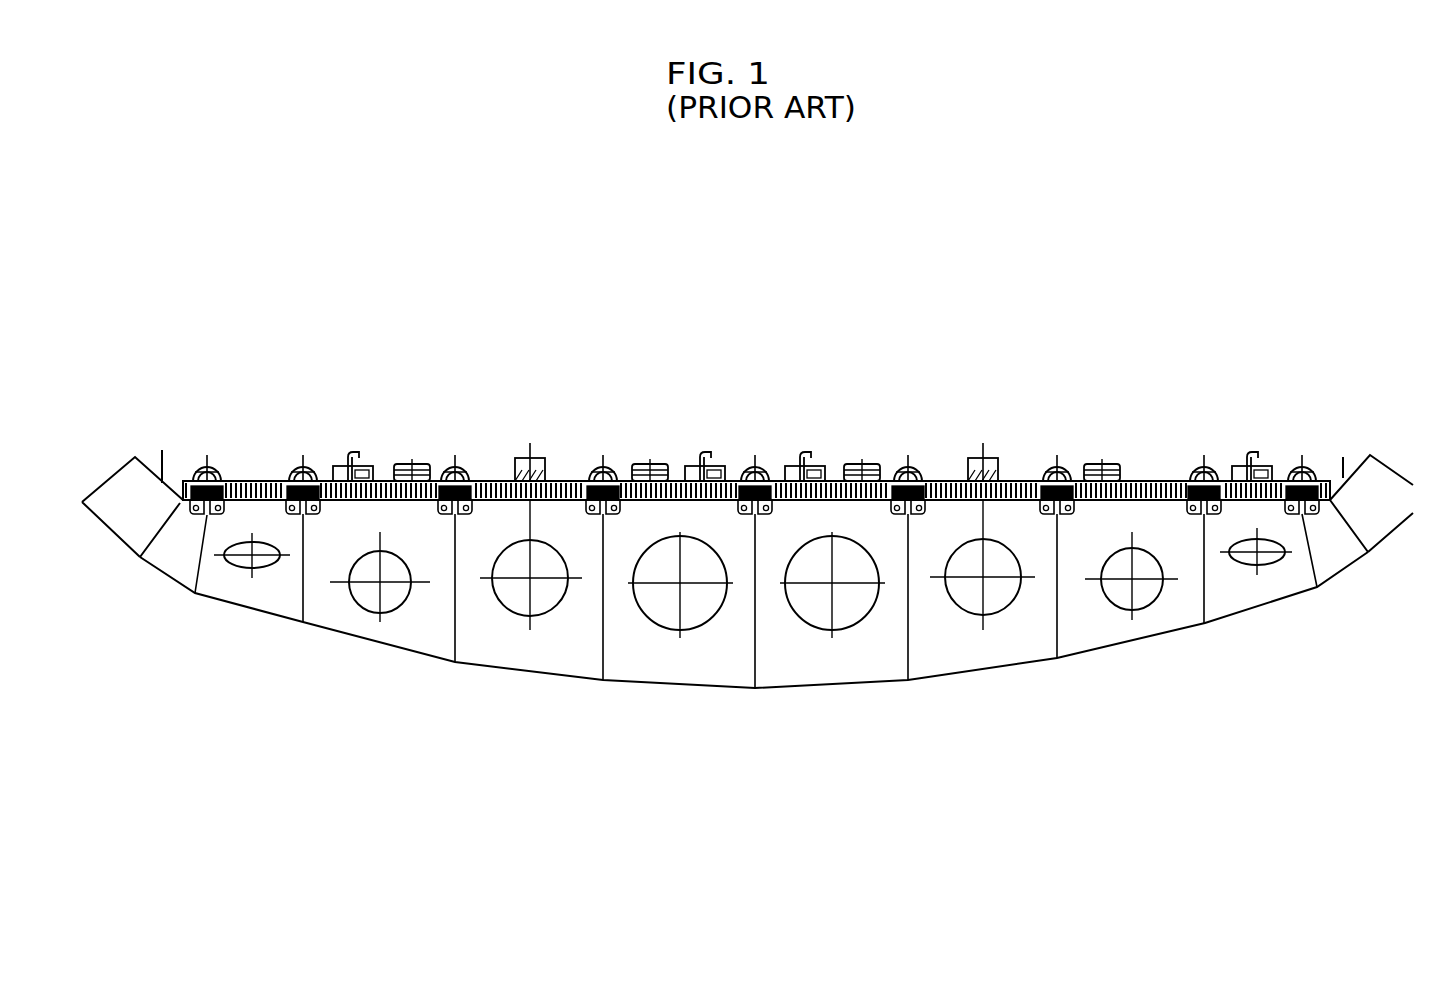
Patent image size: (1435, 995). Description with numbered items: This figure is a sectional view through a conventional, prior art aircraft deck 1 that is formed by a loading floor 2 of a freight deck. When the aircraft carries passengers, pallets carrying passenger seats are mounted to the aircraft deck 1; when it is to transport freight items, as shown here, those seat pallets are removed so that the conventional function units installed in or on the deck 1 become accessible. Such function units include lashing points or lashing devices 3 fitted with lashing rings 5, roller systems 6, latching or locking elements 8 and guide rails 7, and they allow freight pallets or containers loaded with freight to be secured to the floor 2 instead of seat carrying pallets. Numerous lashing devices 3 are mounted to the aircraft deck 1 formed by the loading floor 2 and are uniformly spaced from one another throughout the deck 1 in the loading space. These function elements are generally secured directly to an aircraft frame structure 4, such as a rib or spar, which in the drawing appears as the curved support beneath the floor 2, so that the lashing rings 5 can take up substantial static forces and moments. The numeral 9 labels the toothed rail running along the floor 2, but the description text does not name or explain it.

The aircraft deck 1 is at (466, 298).
The loading floor 2 is at (1337, 470).
The lashing device 3 is at (210, 468).
The aircraft frame structure 4 is at (301, 627).
The lashing ring 5 is at (305, 466).
The roller system 6 is at (863, 470).
The guide rail 7 is at (812, 472).
The latching or locking element 8 is at (537, 473).
The toothed guide rail 9 is at (248, 480).